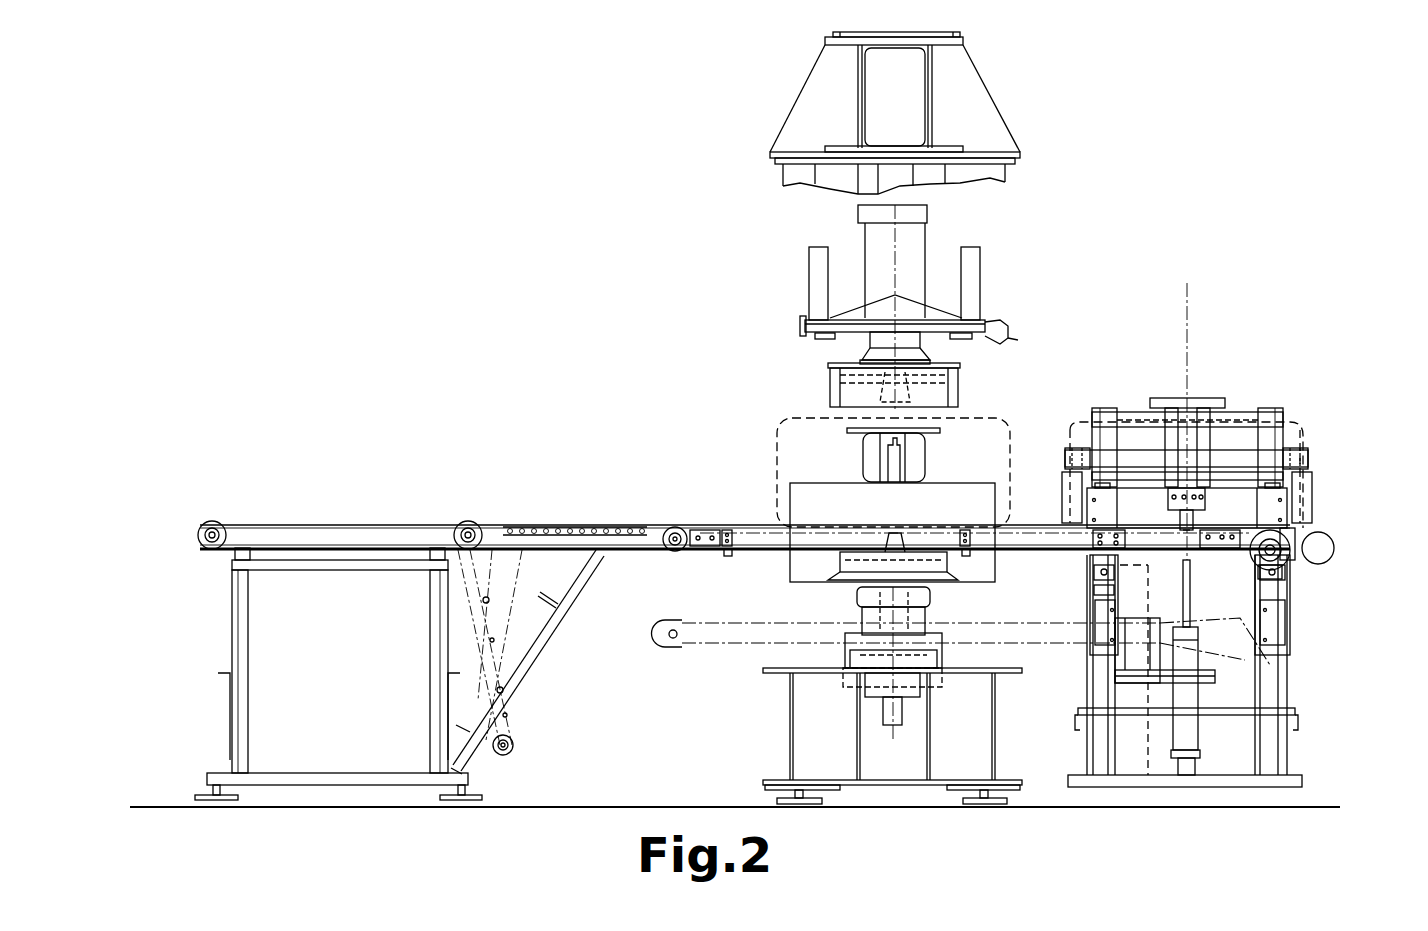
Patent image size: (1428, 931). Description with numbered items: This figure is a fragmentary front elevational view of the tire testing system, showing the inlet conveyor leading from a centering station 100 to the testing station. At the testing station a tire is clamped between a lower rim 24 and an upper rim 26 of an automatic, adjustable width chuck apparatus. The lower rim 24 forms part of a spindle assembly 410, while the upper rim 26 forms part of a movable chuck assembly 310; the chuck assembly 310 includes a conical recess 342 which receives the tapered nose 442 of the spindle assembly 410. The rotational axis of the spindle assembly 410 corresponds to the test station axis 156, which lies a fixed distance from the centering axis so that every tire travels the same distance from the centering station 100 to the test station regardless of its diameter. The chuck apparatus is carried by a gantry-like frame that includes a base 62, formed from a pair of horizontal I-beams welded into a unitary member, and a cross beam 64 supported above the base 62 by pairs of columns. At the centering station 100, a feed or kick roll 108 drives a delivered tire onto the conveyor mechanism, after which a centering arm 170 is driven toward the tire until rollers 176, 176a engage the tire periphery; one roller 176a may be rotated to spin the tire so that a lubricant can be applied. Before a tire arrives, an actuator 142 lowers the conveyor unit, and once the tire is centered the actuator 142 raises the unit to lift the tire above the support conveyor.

The cross beam 64 is at (1002, 38).
The movable chuck assembly 310 is at (948, 232).
The upper rim 26 is at (942, 394).
The conical recess 342 is at (830, 394).
The test station axis 156 is at (893, 508).
The tapered nose 442 is at (880, 540).
The lower rim 24 is at (835, 560).
The spindle assembly 410 is at (938, 620).
The base 62 is at (901, 797).
The centering station 100 is at (1247, 385).
The centering arm 170 is at (1137, 458).
The roller 176 is at (1063, 494).
The roller 176a is at (1310, 495).
The kick roll 108 is at (1334, 546).
The actuator 142 is at (1186, 735).